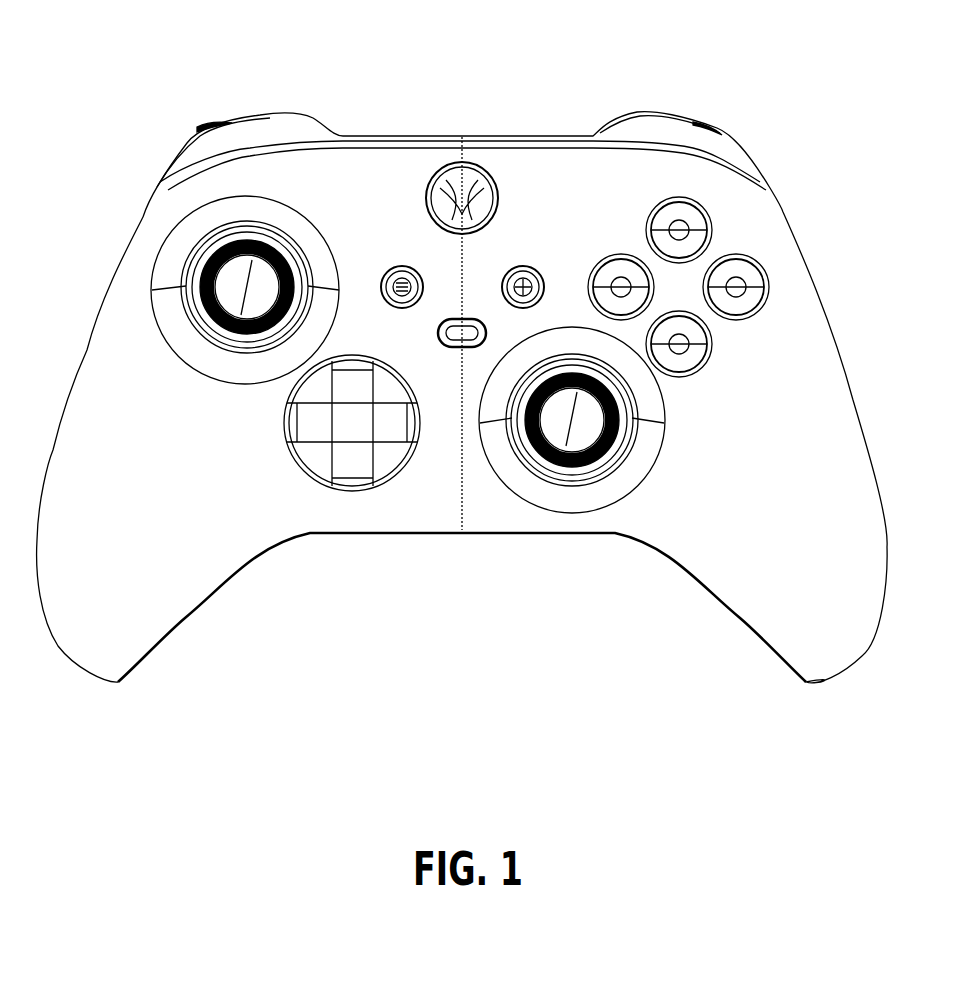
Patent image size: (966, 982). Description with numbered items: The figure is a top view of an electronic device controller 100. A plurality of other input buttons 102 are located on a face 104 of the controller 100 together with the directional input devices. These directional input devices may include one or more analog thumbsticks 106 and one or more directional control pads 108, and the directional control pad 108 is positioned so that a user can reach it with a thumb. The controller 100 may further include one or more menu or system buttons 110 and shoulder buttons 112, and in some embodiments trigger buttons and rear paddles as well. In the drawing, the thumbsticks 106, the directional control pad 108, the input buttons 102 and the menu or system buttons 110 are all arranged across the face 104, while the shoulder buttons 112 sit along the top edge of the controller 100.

The electronic device controller 100 is at (856, 83).
The input buttons 102 is at (745, 280).
The face 104 is at (442, 477).
The analog thumbstick 106 is at (233, 280).
The directional control pad 108 is at (352, 438).
The menu or system button 110 is at (472, 178).
The shoulder button 112 is at (662, 132).